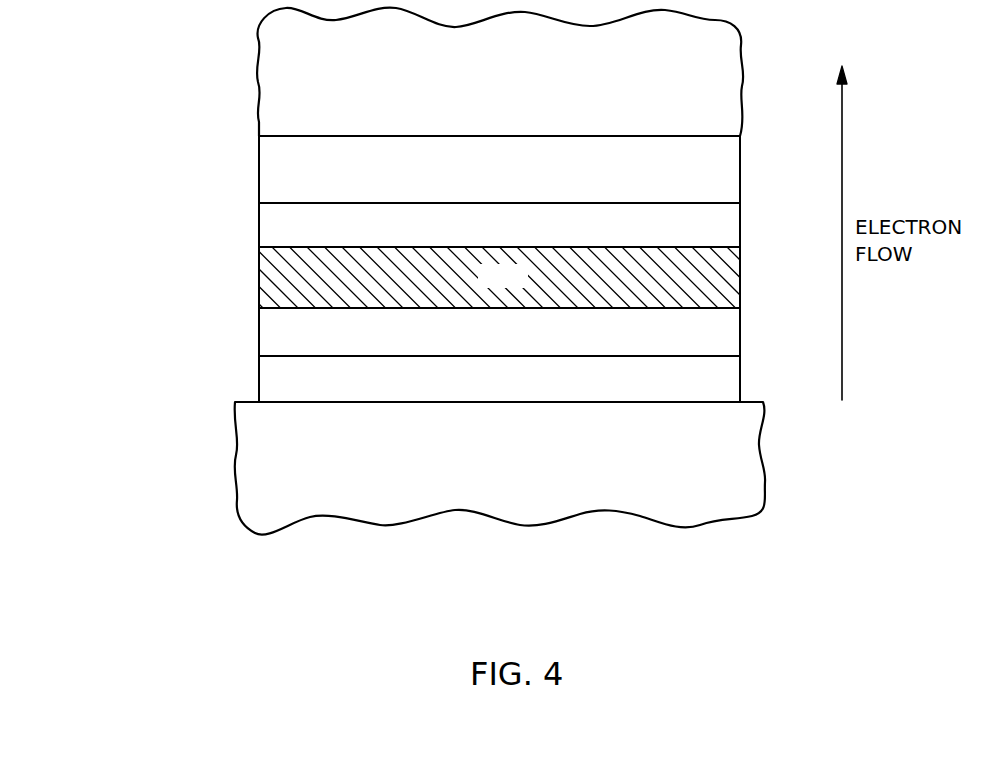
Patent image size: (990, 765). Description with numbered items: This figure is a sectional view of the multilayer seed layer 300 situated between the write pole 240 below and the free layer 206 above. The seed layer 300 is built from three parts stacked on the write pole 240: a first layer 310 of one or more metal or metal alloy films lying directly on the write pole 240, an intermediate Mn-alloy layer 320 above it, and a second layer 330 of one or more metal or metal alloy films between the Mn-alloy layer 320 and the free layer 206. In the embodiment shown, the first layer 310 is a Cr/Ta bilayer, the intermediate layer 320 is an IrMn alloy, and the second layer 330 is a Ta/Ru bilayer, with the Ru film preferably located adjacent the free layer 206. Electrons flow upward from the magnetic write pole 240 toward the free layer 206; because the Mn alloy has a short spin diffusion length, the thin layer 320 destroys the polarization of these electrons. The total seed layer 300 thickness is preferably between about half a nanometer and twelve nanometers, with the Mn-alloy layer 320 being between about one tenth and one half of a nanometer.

The free layer 206 is at (730, 53).
The write pole 240 is at (743, 470).
The multilayer seed layer 300 is at (444, 268).
The second layer 330 is at (243, 137).
The Mn-alloy layer 320 is at (243, 248).
The first layer 310 is at (461, 355).